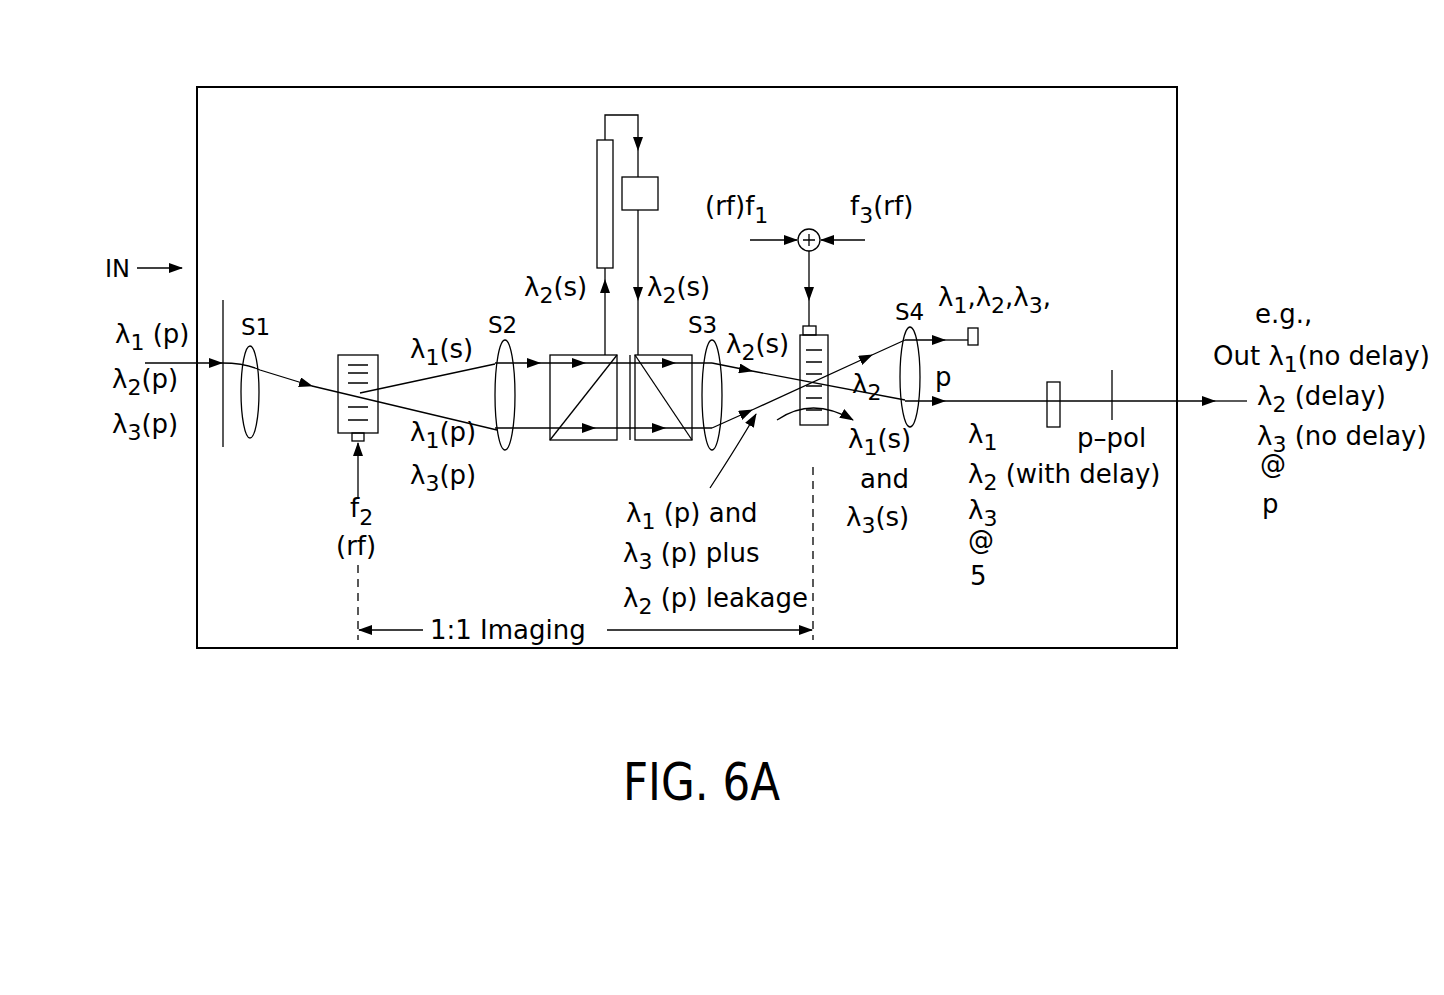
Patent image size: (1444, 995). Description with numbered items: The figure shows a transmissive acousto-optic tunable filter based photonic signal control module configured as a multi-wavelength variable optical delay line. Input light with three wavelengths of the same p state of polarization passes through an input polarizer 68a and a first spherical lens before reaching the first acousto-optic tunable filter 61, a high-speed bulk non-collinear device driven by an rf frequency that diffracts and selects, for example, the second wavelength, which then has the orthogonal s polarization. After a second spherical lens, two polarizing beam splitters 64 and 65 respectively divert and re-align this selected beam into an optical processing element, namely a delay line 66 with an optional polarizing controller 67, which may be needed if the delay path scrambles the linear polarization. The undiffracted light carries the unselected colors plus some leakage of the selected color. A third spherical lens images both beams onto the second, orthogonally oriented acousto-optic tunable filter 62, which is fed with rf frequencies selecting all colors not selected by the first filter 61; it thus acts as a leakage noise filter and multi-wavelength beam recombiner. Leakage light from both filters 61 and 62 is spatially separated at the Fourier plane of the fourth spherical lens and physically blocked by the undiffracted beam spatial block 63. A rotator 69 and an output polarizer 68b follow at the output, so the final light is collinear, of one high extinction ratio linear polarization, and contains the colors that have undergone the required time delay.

The first acousto-optic tunable filter 61 is at (358, 355).
The second acousto-optic tunable filter 62 is at (812, 427).
The undiffracted beam spatial block 63 is at (971, 350).
The first polarizing beam splitter 64 is at (578, 440).
The second polarizing beam splitter 65 is at (670, 440).
The delay line 66 is at (596, 160).
The polarizing controller 67 is at (658, 192).
The input polarizer 68a is at (223, 300).
The output polarizer 68b is at (1119, 360).
The rotator 69 is at (1055, 377).